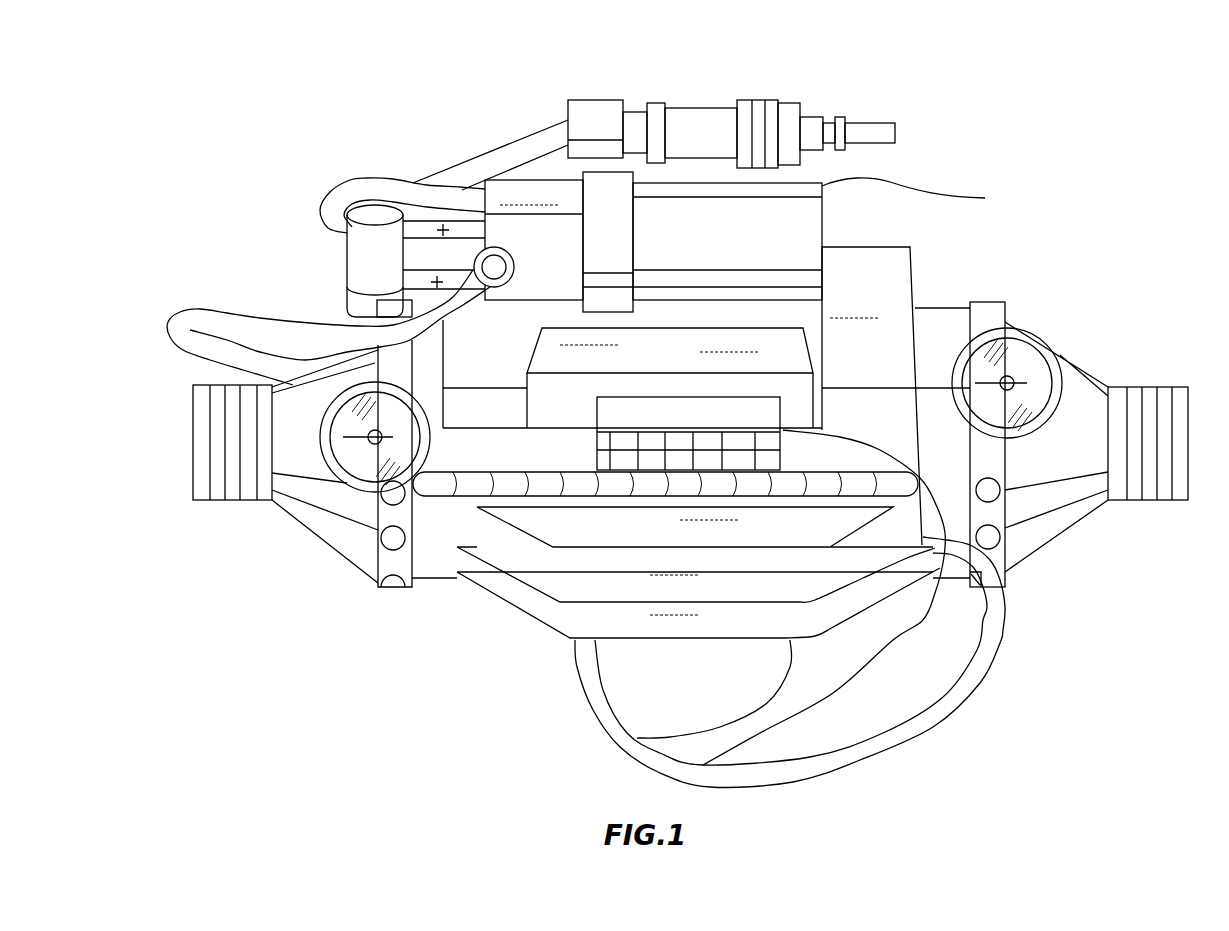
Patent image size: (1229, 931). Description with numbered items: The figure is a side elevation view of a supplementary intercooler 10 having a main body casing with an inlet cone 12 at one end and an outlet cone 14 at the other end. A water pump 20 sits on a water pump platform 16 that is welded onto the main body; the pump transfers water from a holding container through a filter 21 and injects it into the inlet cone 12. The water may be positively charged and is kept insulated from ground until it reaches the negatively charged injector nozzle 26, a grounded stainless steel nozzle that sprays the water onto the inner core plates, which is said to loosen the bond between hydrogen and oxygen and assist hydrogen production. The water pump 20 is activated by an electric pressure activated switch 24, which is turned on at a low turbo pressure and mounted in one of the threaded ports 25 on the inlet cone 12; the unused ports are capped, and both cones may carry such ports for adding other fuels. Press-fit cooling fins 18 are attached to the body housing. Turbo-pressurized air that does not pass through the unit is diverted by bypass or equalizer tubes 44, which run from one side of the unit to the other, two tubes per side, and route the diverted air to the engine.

The supplementary intercooler 10 is at (248, 138).
The inlet cone 12 is at (313, 493).
The outlet cone 14 is at (1072, 400).
The water pump platform 16 is at (883, 272).
The cooling fins 18 is at (537, 605).
The water pump 20 is at (765, 228).
The filter 21 is at (698, 118).
The electric pressure activated switch 24 is at (378, 212).
The threaded ports 25 is at (377, 537).
The injector nozzle 26 is at (305, 358).
The equalizer tubes 44 is at (465, 485).